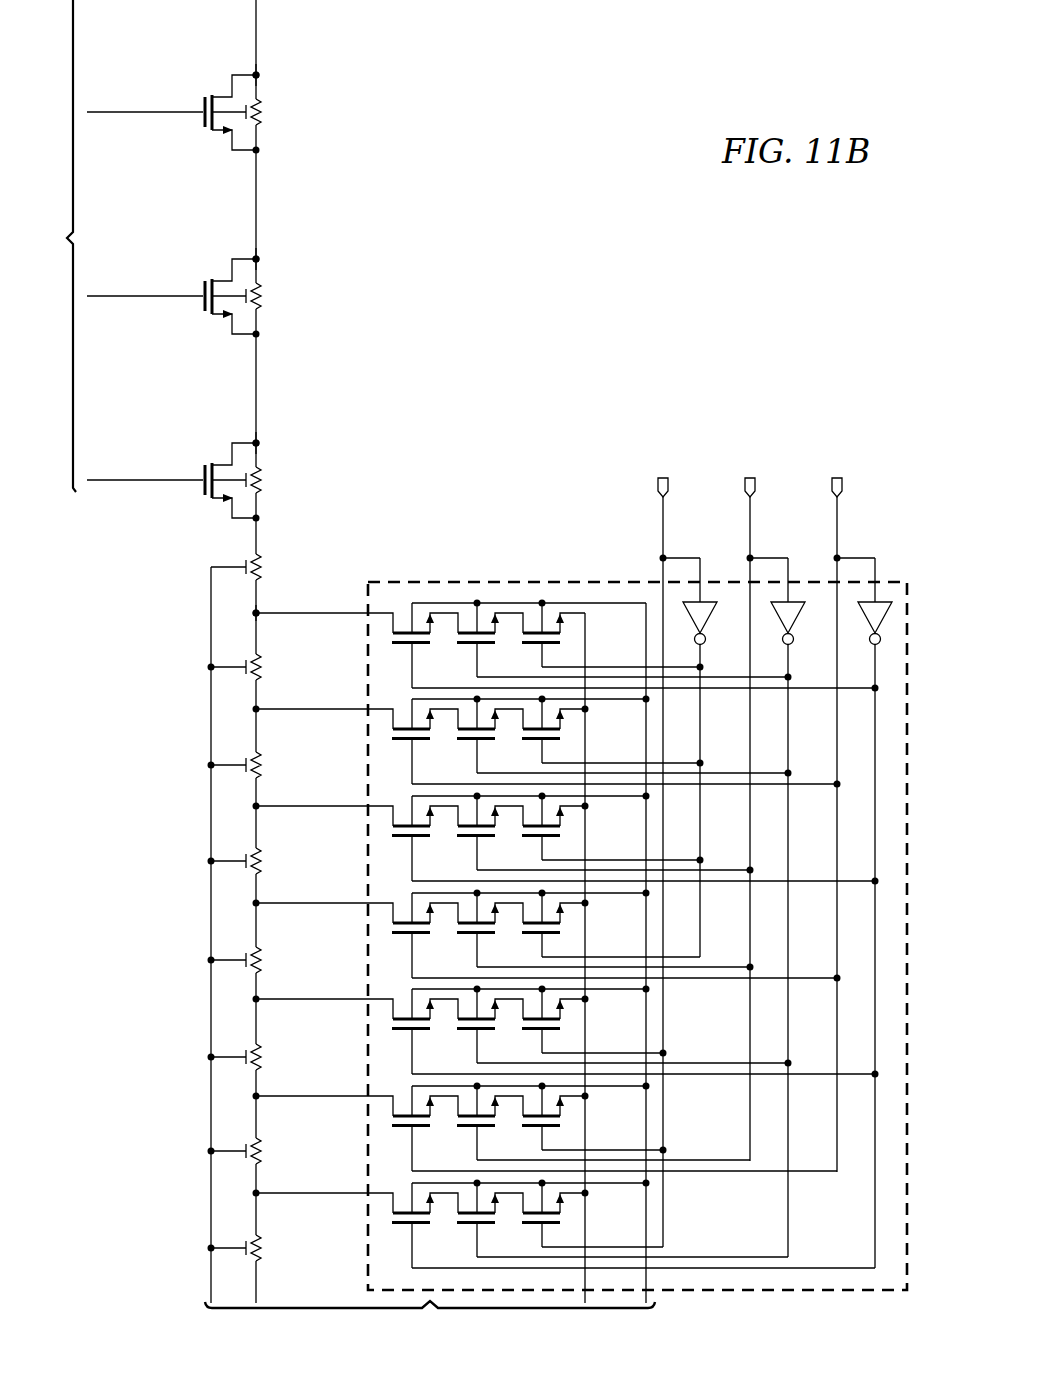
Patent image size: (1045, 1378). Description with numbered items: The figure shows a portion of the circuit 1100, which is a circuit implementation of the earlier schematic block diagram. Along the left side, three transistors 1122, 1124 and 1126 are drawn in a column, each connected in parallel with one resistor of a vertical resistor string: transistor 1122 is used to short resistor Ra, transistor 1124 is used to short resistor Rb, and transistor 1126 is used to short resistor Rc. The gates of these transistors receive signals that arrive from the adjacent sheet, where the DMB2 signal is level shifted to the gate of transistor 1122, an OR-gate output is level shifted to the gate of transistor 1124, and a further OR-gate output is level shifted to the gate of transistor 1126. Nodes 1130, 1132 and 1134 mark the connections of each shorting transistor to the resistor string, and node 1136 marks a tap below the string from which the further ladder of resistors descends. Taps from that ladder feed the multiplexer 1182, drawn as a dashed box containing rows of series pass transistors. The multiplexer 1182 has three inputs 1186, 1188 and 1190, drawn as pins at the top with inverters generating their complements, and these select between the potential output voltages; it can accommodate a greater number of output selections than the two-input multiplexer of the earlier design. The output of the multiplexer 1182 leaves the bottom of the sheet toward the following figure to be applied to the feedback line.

The circuit 1100 is at (760, 254).
The transistor 1122 is at (204, 104).
The transistor 1124 is at (204, 283).
The transistor 1126 is at (204, 467).
The node 1130 is at (254, 75).
The node 1132 is at (254, 259).
The node 1134 is at (254, 443).
The node 1136 is at (258, 618).
The multiplexer 1182 is at (494, 581).
The input 1186 is at (657, 484).
The input 1188 is at (744, 484).
The input 1190 is at (843, 484).